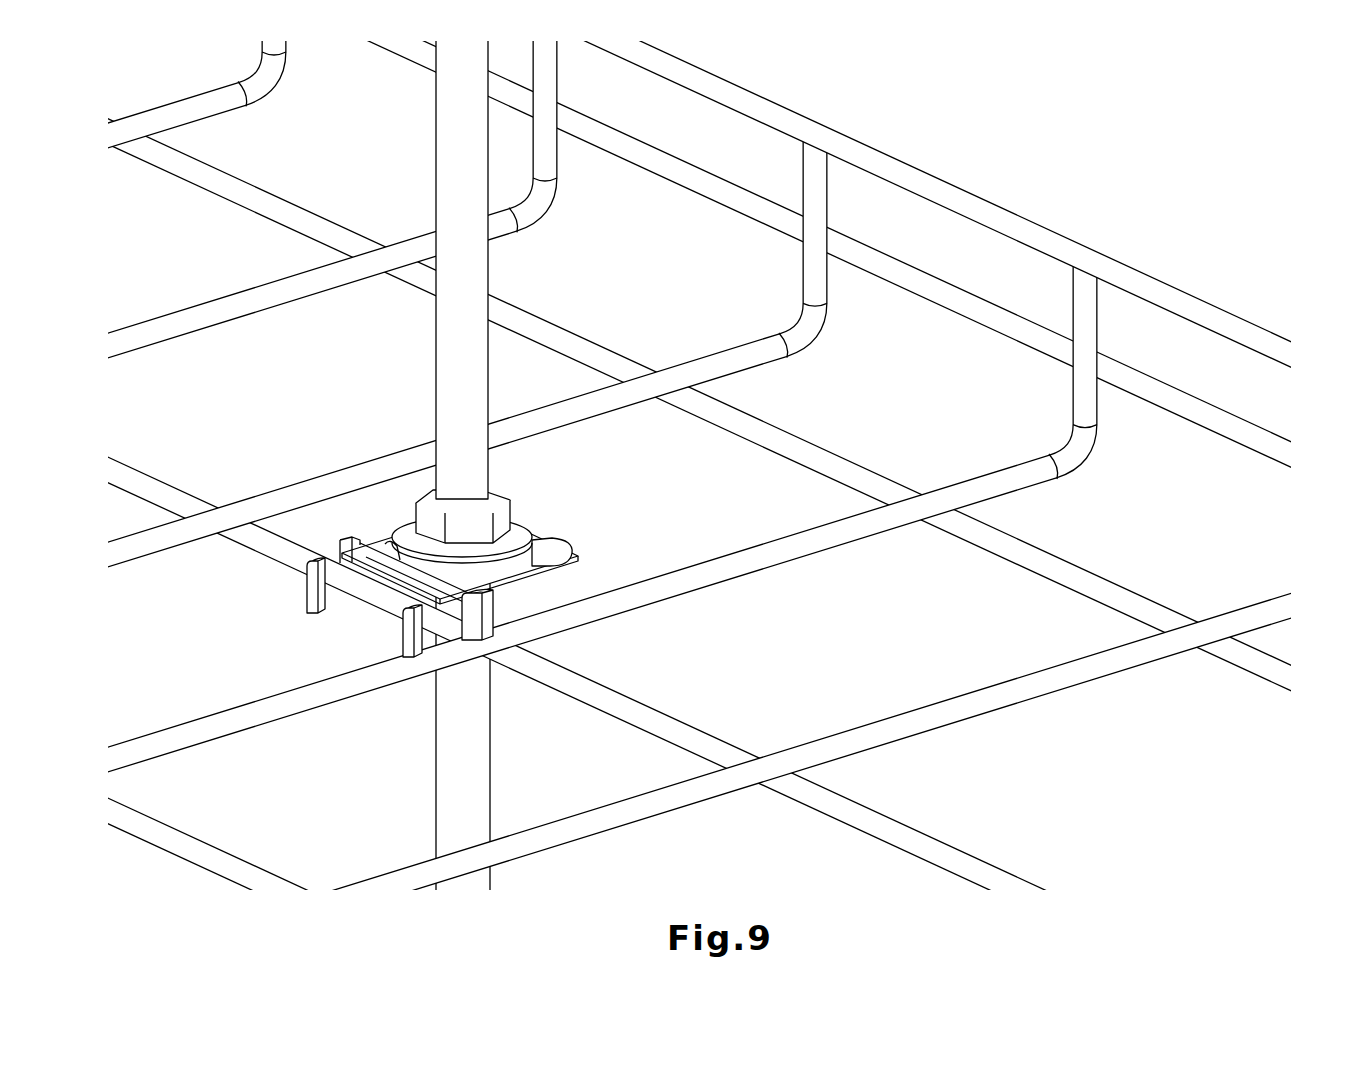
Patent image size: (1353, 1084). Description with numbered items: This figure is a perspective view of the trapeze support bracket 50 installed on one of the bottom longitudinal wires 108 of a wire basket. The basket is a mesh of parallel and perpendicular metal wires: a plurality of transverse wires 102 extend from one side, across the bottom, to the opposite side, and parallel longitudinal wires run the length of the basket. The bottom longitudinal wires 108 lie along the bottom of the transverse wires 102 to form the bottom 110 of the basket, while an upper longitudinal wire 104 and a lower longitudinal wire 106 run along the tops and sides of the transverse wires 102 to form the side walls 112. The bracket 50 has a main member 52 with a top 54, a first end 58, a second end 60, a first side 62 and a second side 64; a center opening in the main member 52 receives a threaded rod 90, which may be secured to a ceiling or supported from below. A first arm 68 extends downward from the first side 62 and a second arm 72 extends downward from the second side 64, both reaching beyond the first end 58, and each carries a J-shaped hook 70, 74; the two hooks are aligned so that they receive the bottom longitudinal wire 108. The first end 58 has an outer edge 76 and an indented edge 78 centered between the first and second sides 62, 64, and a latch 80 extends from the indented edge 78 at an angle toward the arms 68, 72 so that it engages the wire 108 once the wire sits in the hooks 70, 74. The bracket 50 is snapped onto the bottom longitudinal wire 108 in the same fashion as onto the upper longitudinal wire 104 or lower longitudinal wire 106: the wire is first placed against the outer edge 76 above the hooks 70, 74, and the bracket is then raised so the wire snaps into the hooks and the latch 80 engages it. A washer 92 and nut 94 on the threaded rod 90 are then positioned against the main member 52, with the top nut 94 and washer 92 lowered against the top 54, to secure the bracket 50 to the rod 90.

The trapeze support bracket 50 is at (451, 591).
The main member 52 is at (560, 554).
The top 54 is at (410, 589).
The first end 58 is at (555, 628).
The second end 60 is at (588, 525).
The first side 62 is at (393, 530).
The second side 64 is at (574, 549).
The first arm 68 is at (277, 616).
The J-shaped hook 70 is at (322, 616).
The second arm 72 is at (380, 693).
The J-shaped hook 74 is at (418, 645).
The outer edge 76 is at (352, 589).
The indented edge 78 is at (383, 589).
The latch 80 is at (372, 533).
The threaded rod 90 is at (472, 132).
The washer 92 is at (532, 517).
The nut 94 is at (502, 498).
The transverse wires 102 is at (1088, 307).
The upper longitudinal wire 104 is at (918, 188).
The lower longitudinal wire 106 is at (962, 303).
The bottom longitudinal wires 108 is at (700, 743).
The bottom 110 is at (215, 481).
The side walls 112 is at (700, 229).